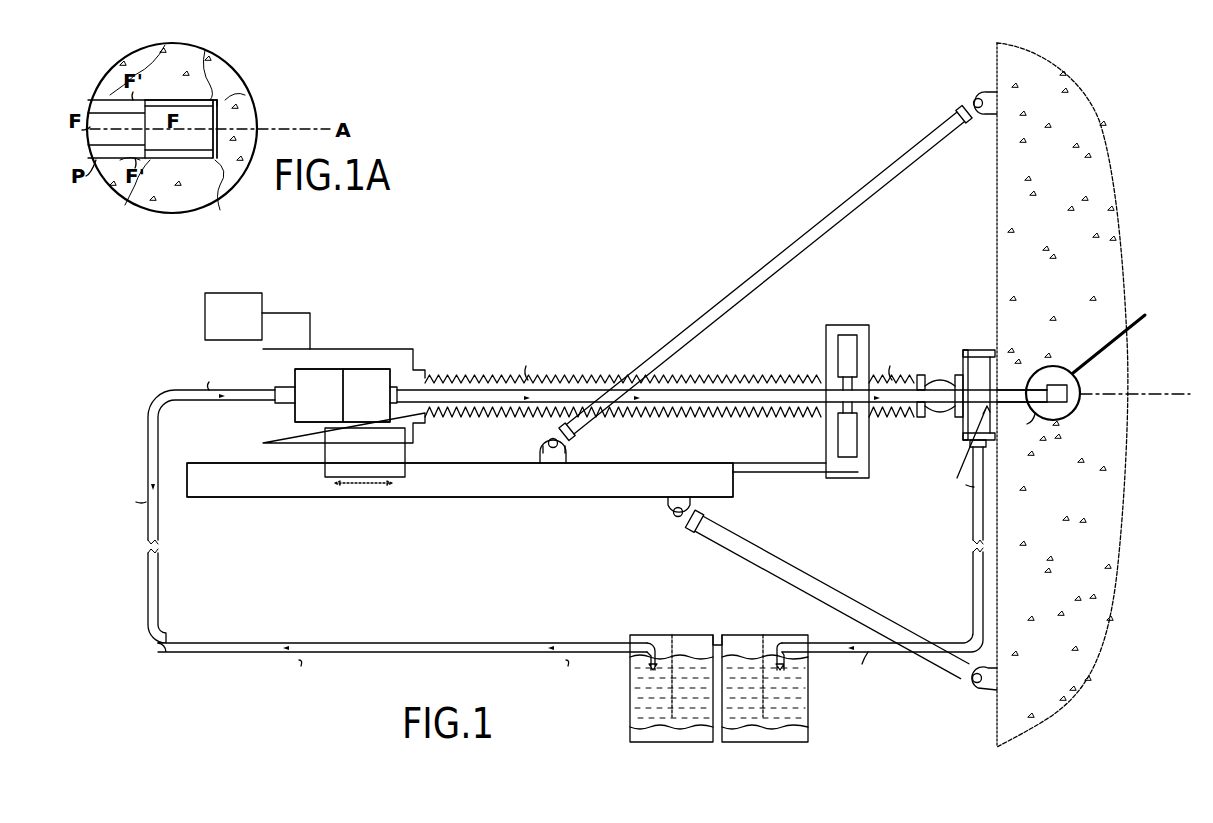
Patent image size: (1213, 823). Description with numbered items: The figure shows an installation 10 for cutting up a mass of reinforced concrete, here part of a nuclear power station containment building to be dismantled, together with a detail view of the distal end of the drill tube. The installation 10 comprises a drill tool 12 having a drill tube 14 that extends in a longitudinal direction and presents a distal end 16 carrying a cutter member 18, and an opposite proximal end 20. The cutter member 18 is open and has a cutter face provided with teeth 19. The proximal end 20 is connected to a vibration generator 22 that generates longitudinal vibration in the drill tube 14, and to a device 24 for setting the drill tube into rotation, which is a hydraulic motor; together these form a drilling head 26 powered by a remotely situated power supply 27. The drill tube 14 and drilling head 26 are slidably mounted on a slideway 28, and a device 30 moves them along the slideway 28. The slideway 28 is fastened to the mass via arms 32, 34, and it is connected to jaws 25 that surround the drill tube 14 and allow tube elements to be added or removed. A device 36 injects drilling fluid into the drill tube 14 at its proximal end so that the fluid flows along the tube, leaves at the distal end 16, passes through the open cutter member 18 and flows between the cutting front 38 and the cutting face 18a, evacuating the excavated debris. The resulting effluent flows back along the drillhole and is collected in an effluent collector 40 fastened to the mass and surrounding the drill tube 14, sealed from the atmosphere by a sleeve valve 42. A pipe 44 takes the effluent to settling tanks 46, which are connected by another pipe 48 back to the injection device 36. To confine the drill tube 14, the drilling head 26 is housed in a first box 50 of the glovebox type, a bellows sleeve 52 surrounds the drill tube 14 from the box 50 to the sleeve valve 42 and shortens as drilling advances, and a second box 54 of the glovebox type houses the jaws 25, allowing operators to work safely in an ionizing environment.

In FIG. 1, the installation 10 is at (584, 187).
In FIG. 1, the drill tool 12 is at (504, 330).
In FIG. 1, the drill tube 14 is at (471, 390).
In FIG. 1A, the drill tube 14 is at (90, 141).
In FIG. 1, the distal end 16 is at (1087, 372).
In FIG. 1, the cutter member 18 is at (1082, 398).
In FIG. 1A, the cutter member 18 is at (194, 160).
In FIG. 1A, the cutting face 18a is at (210, 100).
In FIG. 1A, the teeth 19 is at (215, 102).
In FIG. 1, the proximal end 20 is at (398, 370).
In FIG. 1, the vibration generator 22 is at (306, 409).
In FIG. 1, the device for setting the drill tube into rotation 24 is at (355, 409).
In FIG. 1, the jaws 25 is at (847, 356).
In FIG. 1, the drilling head 26 is at (354, 368).
In FIG. 1, the power supply 27 is at (224, 329).
In FIG. 1, the slideway 28 is at (277, 497).
In FIG. 1, the device for moving the drill tube and the drilling head 30 is at (354, 458).
In FIG. 1, the arm 32 is at (737, 290).
In FIG. 1, the arm 34 is at (787, 576).
In FIG. 1, the device for injecting a drilling fluid 36 is at (283, 404).
In FIG. 1A, the cutting front 38 is at (218, 130).
In FIG. 1, the effluent collector 40 is at (982, 352).
In FIG. 1, the sleeve valve 42 is at (928, 406).
In FIG. 1, the pipe 44 is at (972, 582).
In FIG. 1, the settling tanks 46 is at (817, 723).
In FIG. 1, the pipe 48 is at (406, 643).
In FIG. 1, the first box 50 is at (339, 349).
In FIG. 1, the bellows sleeve 52 is at (744, 378).
In FIG. 1, the second box 54 is at (851, 325).